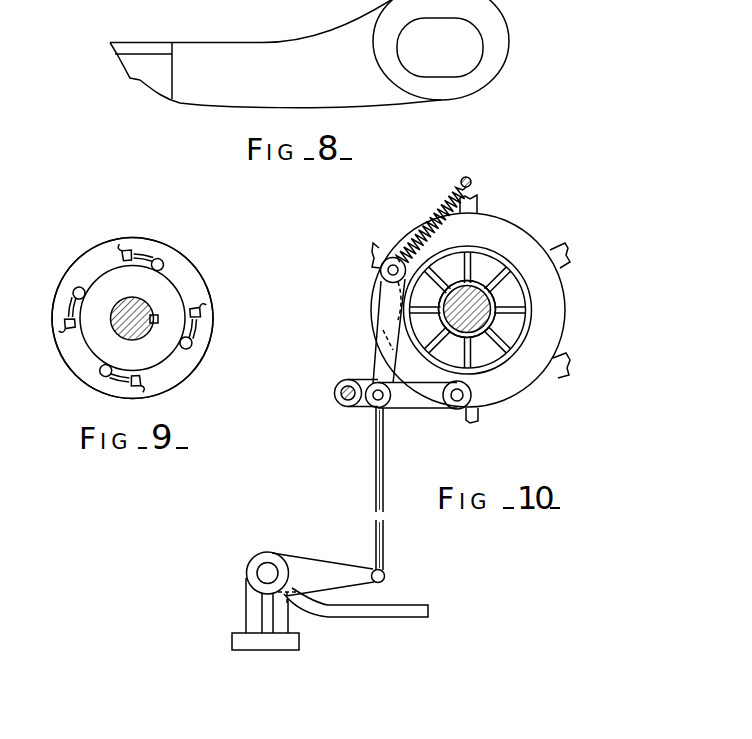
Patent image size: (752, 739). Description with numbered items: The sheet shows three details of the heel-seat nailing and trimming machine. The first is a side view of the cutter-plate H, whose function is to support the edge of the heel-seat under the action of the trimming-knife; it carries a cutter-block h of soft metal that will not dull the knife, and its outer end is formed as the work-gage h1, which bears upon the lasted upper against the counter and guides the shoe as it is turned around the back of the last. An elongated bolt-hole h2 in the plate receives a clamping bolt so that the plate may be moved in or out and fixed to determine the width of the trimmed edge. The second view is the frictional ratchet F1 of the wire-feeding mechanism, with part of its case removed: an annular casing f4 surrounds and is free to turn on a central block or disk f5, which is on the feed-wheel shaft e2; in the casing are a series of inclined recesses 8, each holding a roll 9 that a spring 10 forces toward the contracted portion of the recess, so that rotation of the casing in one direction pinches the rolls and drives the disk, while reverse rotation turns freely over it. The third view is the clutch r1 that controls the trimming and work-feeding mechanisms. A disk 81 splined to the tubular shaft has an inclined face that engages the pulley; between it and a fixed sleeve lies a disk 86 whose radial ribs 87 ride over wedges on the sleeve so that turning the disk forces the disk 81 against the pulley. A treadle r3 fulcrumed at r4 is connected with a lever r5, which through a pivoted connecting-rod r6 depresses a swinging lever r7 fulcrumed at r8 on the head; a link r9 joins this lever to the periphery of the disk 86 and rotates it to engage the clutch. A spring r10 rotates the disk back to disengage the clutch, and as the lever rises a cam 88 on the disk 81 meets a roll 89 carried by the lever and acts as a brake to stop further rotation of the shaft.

In FIG. 8, the cutter-plate H is at (324, 54).
In FIG. 8, the cutter-block h is at (141, 41).
In FIG. 8, the work-gage h1 is at (114, 53).
In FIG. 8, the elongated bolt-hole h2 is at (440, 47).
In FIG. 9, the ratchet F1 is at (137, 236).
In FIG. 9, the annular casing f4 is at (209, 283).
In FIG. 9, the central block or disk f5 is at (132, 318).
In FIG. 9, the shaft e2 is at (125, 338).
In FIG. 9, the inclined recesses 8 is at (92, 282).
In FIG. 10, the inclined recesses 8 is at (473, 309).
In FIG. 9, the roll 9 is at (158, 259).
In FIG. 9, the spring 10 is at (138, 255).
In FIG. 10, the cam 88 is at (553, 322).
In FIG. 10, the disk 81 is at (567, 259).
In FIG. 10, the disk 86 is at (518, 300).
In FIG. 10, the radial ribs or projections 87 is at (476, 255).
In FIG. 10, the clutch r1 is at (467, 301).
In FIG. 10, the spring r10 is at (433, 214).
In FIG. 10, the link r9 is at (386, 321).
In FIG. 10, the swinging lever r7 is at (412, 396).
In FIG. 10, the roll 89 is at (472, 388).
In FIG. 10, the fulcrum r8 is at (338, 392).
In FIG. 10, the connecting-rod r6 is at (389, 495).
In FIG. 10, the lever r5 is at (313, 566).
In FIG. 10, the fulcrum r4 is at (262, 573).
In FIG. 10, the treadle r3 is at (372, 603).